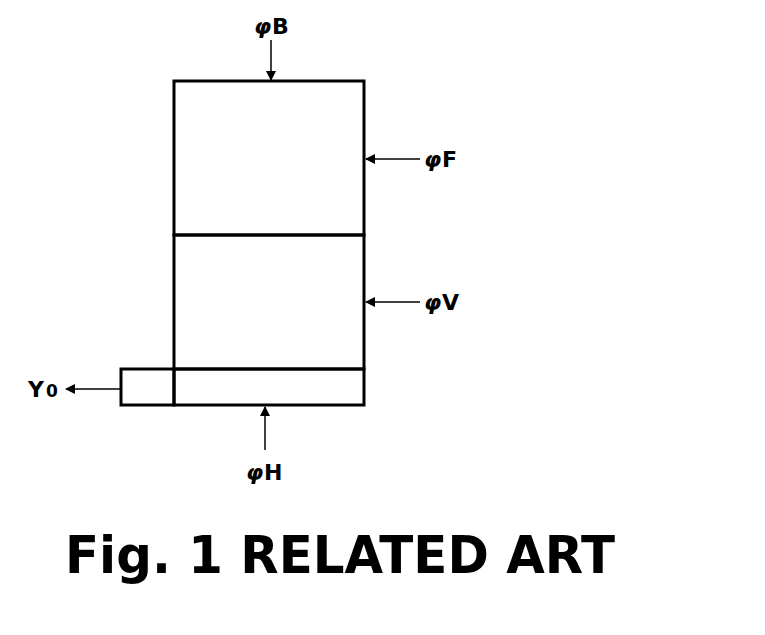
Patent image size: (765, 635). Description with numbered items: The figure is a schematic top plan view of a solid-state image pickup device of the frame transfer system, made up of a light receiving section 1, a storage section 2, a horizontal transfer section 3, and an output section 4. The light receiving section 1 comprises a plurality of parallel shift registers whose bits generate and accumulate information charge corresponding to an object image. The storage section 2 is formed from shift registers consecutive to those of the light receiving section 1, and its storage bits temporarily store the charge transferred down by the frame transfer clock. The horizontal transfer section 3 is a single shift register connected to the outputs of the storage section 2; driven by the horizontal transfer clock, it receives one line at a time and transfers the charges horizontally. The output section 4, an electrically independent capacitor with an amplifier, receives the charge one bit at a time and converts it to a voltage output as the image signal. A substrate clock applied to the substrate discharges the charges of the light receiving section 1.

The light receiving section 1 is at (190, 170).
The storage section 2 is at (190, 294).
The horizontal transfer section 3 is at (352, 397).
The output section 4 is at (146, 397).